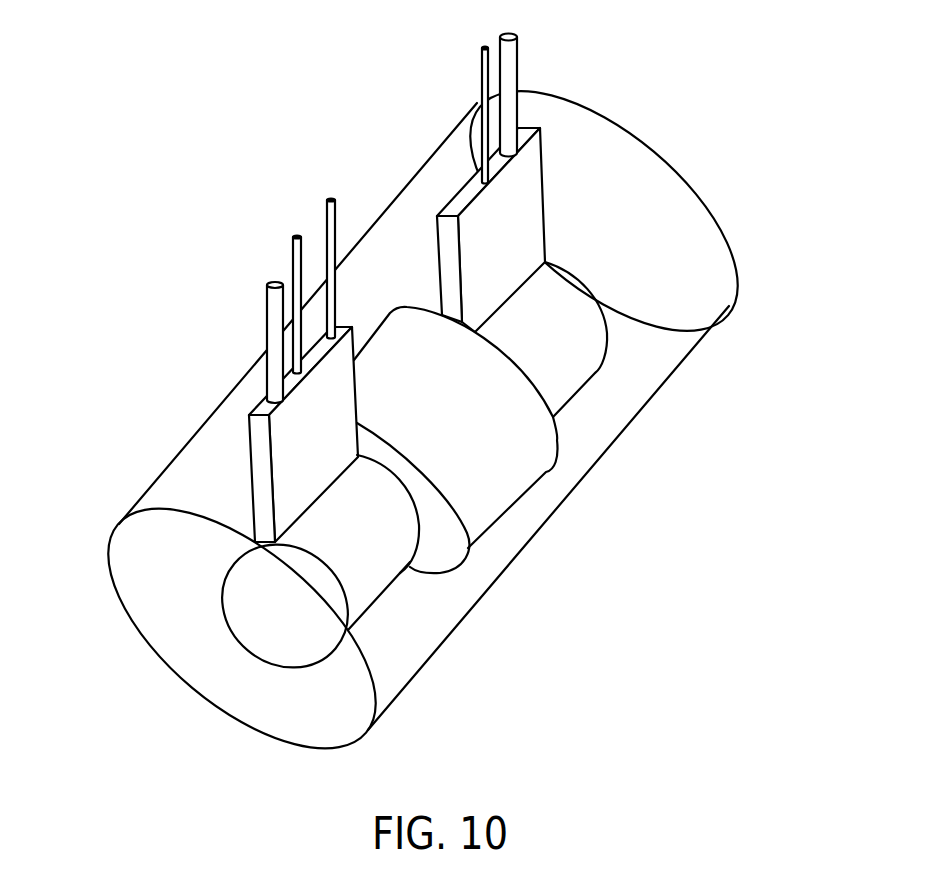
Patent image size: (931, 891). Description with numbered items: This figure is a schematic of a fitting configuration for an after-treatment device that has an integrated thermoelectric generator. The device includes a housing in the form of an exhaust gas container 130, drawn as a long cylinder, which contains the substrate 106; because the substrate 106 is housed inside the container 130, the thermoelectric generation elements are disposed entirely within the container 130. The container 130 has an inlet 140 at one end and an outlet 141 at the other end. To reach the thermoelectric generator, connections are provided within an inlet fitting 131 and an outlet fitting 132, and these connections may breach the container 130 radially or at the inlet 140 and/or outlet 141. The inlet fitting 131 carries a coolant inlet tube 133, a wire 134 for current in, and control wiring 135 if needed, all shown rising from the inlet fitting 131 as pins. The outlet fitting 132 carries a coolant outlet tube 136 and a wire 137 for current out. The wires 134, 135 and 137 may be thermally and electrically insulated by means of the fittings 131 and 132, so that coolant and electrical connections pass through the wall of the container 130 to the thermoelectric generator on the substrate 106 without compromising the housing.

The substrate 106 is at (517, 478).
The exhaust gas container 130 is at (371, 727).
The inlet fitting 131 is at (375, 585).
The outlet fitting 132 is at (576, 363).
The coolant inlet tube 133 is at (266, 306).
The wire for current in 134 is at (292, 250).
The control wiring 135 is at (327, 210).
The coolant outlet tube 136 is at (518, 46).
The wire for current out 137 is at (480, 70).
The inlet 140 is at (165, 649).
The outlet 141 is at (650, 153).